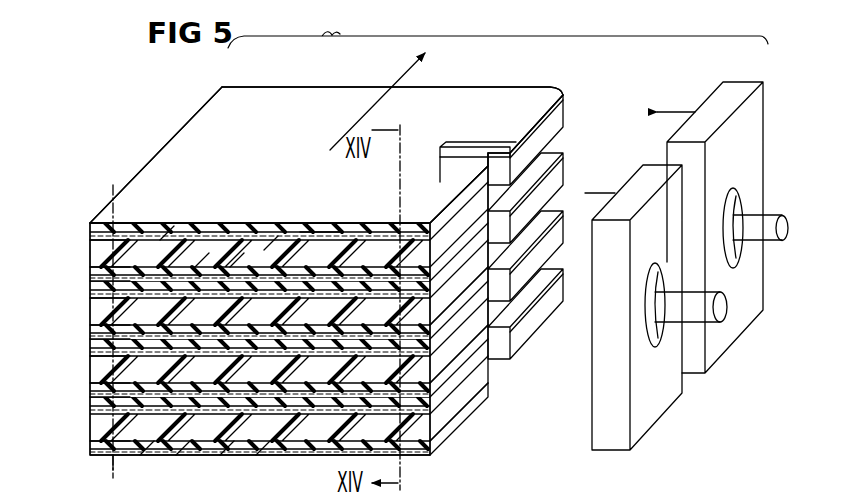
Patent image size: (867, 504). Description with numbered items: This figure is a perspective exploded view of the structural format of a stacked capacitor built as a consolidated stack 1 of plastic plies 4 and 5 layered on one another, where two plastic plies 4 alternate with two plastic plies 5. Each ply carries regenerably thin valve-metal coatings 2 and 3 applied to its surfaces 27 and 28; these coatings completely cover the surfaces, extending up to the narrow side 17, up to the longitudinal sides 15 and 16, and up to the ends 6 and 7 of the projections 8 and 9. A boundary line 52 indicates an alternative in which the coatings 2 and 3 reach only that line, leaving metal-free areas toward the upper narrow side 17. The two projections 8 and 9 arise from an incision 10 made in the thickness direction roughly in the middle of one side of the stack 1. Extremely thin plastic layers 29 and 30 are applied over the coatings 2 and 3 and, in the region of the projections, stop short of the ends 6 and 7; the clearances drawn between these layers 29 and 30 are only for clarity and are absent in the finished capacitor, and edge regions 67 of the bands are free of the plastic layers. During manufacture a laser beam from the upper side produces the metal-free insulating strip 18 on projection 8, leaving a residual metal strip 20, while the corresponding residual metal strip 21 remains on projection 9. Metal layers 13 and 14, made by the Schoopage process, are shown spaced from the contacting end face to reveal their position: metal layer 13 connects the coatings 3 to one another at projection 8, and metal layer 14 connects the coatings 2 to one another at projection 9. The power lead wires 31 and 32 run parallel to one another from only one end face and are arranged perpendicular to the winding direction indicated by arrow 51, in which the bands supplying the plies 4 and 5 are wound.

The consolidated stack 1 is at (296, 99).
The coating layer 2 is at (160, 241).
The coating layer 3 is at (204, 257).
The plastic ply 4 is at (90, 253).
The plastic ply 5 is at (90, 313).
The end of projection 6 is at (426, 203).
The end of projection 7 is at (568, 115).
The projection 8 is at (430, 179).
The projection 9 is at (512, 117).
The incision 10 is at (452, 144).
The metal layer 13 is at (620, 453).
The metal layer 14 is at (694, 371).
The longitudinal side 15 is at (310, 231).
The longitudinal side 16 is at (445, 87).
The narrow side 17 is at (184, 125).
The metal-free insulating strip 18 is at (400, 219).
The residual metal strip 20 is at (440, 155).
The residual metal strip 21 is at (484, 155).
The surface of plastic ply 27 is at (272, 243).
The surface of plastic ply 28 is at (238, 271).
The extremely thin plastic layer 29 is at (90, 226).
The extremely thin plastic layer 30 is at (90, 271).
The power lead wire 31 is at (717, 337).
The power lead wire 32 is at (739, 245).
The arrow 51 is at (404, 77).
The boundary line 52 is at (112, 195).
The edge region 67 is at (556, 97).